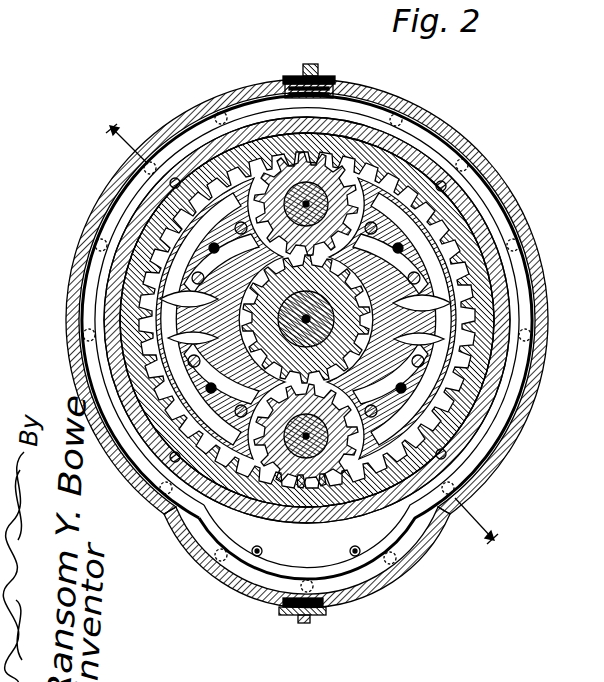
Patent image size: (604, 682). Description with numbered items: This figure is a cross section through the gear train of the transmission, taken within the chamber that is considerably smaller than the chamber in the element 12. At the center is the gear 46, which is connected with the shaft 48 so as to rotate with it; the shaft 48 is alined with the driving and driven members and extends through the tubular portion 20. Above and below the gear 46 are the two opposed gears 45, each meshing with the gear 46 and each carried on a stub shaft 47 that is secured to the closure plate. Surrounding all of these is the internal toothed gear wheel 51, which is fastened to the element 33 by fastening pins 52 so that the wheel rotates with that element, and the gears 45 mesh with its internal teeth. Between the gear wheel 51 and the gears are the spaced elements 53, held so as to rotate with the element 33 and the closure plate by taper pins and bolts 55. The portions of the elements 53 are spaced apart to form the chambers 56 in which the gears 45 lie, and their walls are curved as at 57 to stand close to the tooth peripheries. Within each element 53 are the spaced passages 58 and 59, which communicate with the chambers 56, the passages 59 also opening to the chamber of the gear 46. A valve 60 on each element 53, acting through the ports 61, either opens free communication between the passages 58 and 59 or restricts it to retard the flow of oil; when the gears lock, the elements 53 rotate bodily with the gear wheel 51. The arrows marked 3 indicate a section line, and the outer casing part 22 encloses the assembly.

The section line 3- 3 is at (340, 339).
The element 12 is at (500, 421).
The tubular portion 20 is at (318, 70).
The housing 22 is at (401, 107).
The element 33 is at (156, 447).
The opposed gears 45 is at (406, 140).
The gear 46 is at (118, 352).
The stub shafts 47 is at (354, 150).
The shaft 48 is at (152, 433).
The internal toothed gear wheel 51 is at (509, 297).
The fastening pins 52 is at (444, 183).
The spaced elements 53 is at (152, 267).
The bolts 55 is at (441, 374).
The chambers 56 is at (212, 137).
The curved wall 57 is at (414, 158).
The passages 58 is at (143, 298).
The passages 59 is at (178, 240).
The valves 60 is at (84, 331).
The ports 61 is at (162, 314).